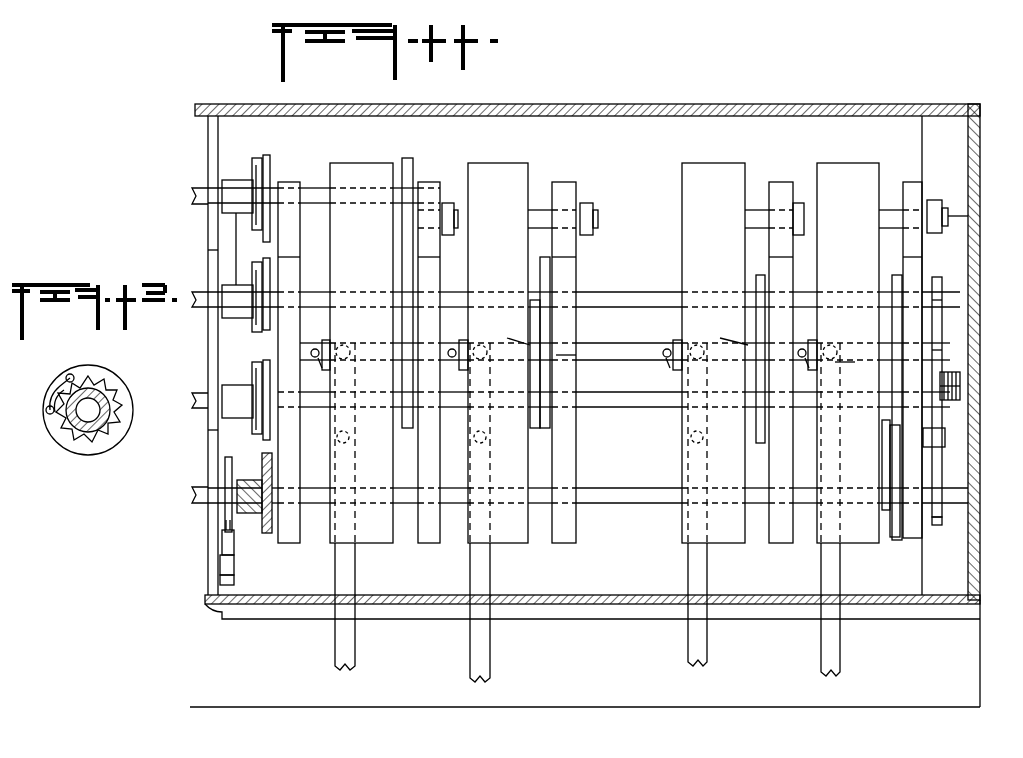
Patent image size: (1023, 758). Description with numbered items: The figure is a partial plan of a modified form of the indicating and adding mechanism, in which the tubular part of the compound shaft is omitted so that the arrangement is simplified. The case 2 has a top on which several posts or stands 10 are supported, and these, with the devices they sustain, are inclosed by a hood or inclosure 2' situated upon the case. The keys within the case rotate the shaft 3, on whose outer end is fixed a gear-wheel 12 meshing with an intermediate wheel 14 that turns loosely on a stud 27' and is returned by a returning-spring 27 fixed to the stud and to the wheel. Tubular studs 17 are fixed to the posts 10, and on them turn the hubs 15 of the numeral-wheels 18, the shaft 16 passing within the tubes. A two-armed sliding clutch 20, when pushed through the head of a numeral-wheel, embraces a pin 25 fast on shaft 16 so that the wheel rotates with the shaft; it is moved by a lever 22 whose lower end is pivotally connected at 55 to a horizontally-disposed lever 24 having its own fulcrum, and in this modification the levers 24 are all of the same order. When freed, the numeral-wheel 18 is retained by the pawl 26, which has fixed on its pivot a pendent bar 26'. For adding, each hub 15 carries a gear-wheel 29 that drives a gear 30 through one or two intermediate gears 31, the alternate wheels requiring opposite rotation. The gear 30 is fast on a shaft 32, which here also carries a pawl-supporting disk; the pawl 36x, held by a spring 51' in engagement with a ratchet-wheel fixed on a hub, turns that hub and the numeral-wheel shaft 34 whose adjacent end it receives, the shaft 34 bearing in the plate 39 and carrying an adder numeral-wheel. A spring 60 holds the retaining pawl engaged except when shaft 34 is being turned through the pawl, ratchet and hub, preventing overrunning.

In FIG. 11, the case 2 is at (595, 405).
In FIG. 11, the hood 2' is at (587, 102).
In FIG. 11, the shaft 3 is at (946, 437).
In FIG. 11, the posts 10 is at (290, 188).
In FIG. 11, the gear-wheel 12 is at (938, 525).
In FIG. 11, the intermediate wheel 14 is at (943, 285).
In FIG. 11, the hub 15 is at (530, 343).
In FIG. 11, the shaft 16 is at (310, 345).
In FIG. 11, the tubular studs 17 is at (560, 350).
In FIG. 11, the numeral-wheels 18 is at (360, 170).
In FIG. 11, the sliding clutch 20 is at (320, 362).
In FIG. 11, the lever 22 is at (855, 365).
In FIG. 11, the lever 24 is at (468, 643).
In FIG. 11, the pin 25 is at (452, 348).
In FIG. 11, the pawl 26 is at (659, 368).
In FIG. 11, the pendent bar 26' is at (702, 205).
In FIG. 11, the returning-spring 27 is at (976, 382).
In FIG. 11, the stud 27' is at (978, 391).
In FIG. 11, the gear-wheel 29 is at (690, 310).
In FIG. 11, the gear 30 is at (407, 160).
In FIG. 11, the intermediate gears 31 is at (882, 463).
In FIG. 11, the shaft 32 is at (310, 188).
In FIG. 11, the numeral-wheel shaft 34 is at (203, 290).
In FIG. 12, the numeral-wheel shaft 34 is at (96, 414).
In FIG. 11, the pawl 36x is at (252, 392).
In FIG. 12, the pawl 36x is at (48, 402).
In FIG. 11, the plate 39 is at (208, 435).
In FIG. 12, the pawl lever 51' is at (59, 382).
In FIG. 11, the pivotal connection 55 is at (832, 346).
In FIG. 11, the spring 60 is at (222, 542).